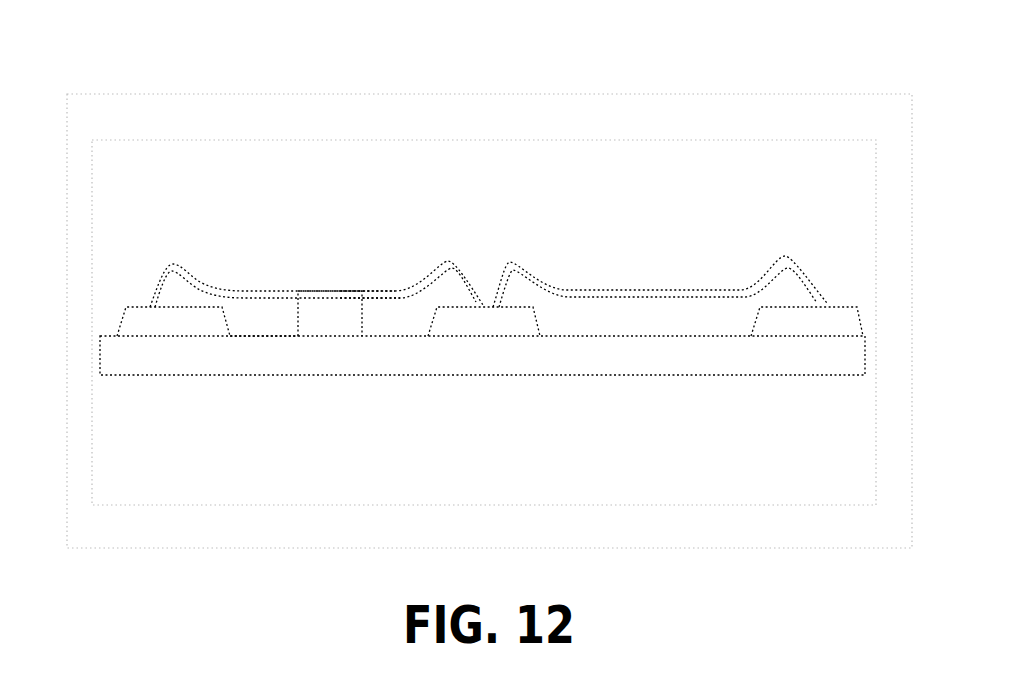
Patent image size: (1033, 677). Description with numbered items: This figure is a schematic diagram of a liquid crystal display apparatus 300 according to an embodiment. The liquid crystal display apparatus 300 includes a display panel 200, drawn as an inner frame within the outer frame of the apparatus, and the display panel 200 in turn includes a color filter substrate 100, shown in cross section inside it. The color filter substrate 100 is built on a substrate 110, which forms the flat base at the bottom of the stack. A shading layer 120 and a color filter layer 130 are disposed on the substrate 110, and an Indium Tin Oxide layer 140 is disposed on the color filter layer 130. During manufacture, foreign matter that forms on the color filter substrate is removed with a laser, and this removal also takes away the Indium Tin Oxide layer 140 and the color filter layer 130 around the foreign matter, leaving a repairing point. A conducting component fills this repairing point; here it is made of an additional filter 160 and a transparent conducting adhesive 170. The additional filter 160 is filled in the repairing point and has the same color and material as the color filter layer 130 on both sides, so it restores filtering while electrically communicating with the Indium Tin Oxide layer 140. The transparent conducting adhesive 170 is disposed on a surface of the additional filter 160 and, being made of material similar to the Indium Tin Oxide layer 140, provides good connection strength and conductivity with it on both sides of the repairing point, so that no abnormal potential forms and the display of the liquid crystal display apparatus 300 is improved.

The color filter substrate 100 is at (489, 237).
The substrate 110 is at (482, 355).
The shading layer 120 is at (143, 317).
The color filter layer 130 is at (258, 320).
The Indium Tin Oxide layer 140 is at (225, 292).
The additional filter 160 is at (312, 314).
The transparent conducting adhesive 170 is at (352, 292).
The display panel 200 is at (603, 135).
The liquid crystal display apparatus 300 is at (329, 90).